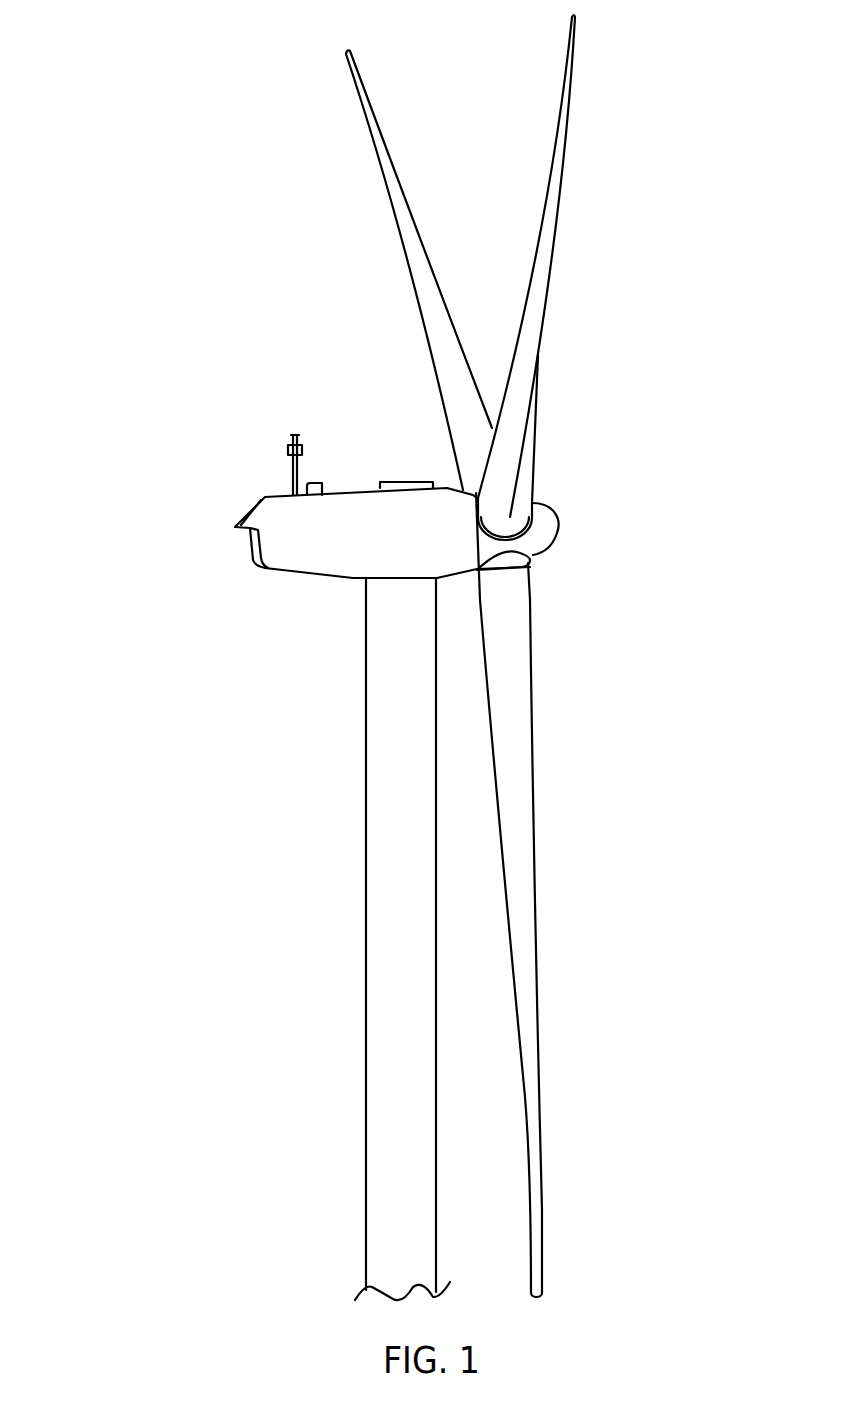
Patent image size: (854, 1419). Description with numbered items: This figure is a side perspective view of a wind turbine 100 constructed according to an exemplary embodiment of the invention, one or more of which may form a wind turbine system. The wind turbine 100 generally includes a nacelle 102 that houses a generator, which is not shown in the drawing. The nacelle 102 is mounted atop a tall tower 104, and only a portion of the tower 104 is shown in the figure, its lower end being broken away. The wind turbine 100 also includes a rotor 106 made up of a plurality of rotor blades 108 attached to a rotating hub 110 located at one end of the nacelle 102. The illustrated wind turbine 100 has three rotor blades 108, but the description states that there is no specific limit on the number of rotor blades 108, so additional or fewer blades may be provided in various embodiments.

The wind turbine 100 is at (200, 283).
The nacelle 102 is at (313, 577).
The tower 104 is at (365, 880).
The rotor 106 is at (640, 307).
The rotor blades 108 is at (387, 140).
The rotating hub 110 is at (553, 543).